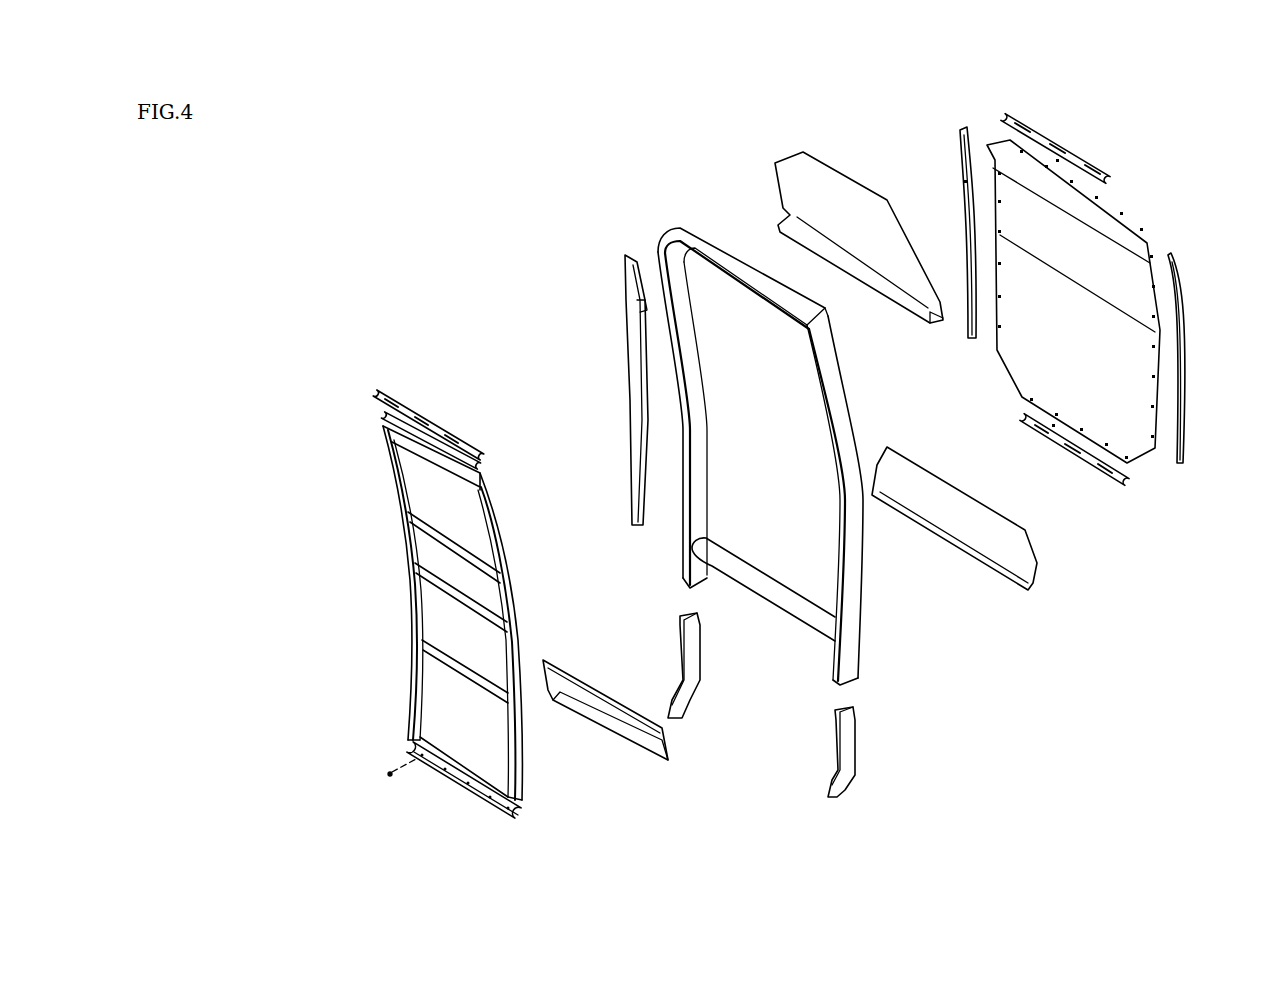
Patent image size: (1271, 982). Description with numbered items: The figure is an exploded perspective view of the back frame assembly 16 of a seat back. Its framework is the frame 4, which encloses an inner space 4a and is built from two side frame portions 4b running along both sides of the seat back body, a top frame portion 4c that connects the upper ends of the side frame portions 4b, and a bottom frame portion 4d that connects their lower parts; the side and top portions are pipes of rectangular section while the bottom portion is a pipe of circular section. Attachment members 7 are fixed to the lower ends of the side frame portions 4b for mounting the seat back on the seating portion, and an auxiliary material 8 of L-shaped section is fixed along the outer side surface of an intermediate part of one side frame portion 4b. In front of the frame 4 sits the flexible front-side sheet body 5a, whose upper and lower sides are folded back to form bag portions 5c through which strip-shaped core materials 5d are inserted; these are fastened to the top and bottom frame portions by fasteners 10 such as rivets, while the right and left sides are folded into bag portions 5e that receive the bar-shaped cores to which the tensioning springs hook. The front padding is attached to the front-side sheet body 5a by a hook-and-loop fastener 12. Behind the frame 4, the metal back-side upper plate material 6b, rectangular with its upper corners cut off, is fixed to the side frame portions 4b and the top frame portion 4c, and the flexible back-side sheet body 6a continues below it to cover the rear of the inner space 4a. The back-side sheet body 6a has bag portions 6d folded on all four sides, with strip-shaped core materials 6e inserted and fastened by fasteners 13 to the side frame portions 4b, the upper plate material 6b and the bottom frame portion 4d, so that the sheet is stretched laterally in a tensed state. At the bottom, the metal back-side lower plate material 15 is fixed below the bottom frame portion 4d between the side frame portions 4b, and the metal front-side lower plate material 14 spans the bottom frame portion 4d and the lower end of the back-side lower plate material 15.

The back frame assembly 16 is at (276, 110).
The frame 4 is at (708, 215).
The inner space 4a is at (757, 454).
The side frame portion 4b is at (686, 385).
The top frame portion 4c is at (720, 255).
The bottom frame portion 4d is at (782, 604).
The front-side sheet body 5a is at (445, 617).
The bag portion 5c is at (410, 415).
The core material 5d is at (445, 430).
The bag portion 5e is at (403, 528).
The back-side sheet body 6a is at (1063, 340).
The back-side upper plate material 6b is at (828, 163).
The bag portion 6d is at (965, 180).
The core material 6e is at (963, 275).
The attachment member 7 is at (680, 660).
The auxiliary material 8 is at (630, 370).
The fastener 10 is at (390, 776).
The hook-and-loop fastener 12 is at (450, 660).
The fastener 13 is at (1103, 162).
The front-side lower plate material 14 is at (590, 685).
The back-side lower plate material 15 is at (950, 480).